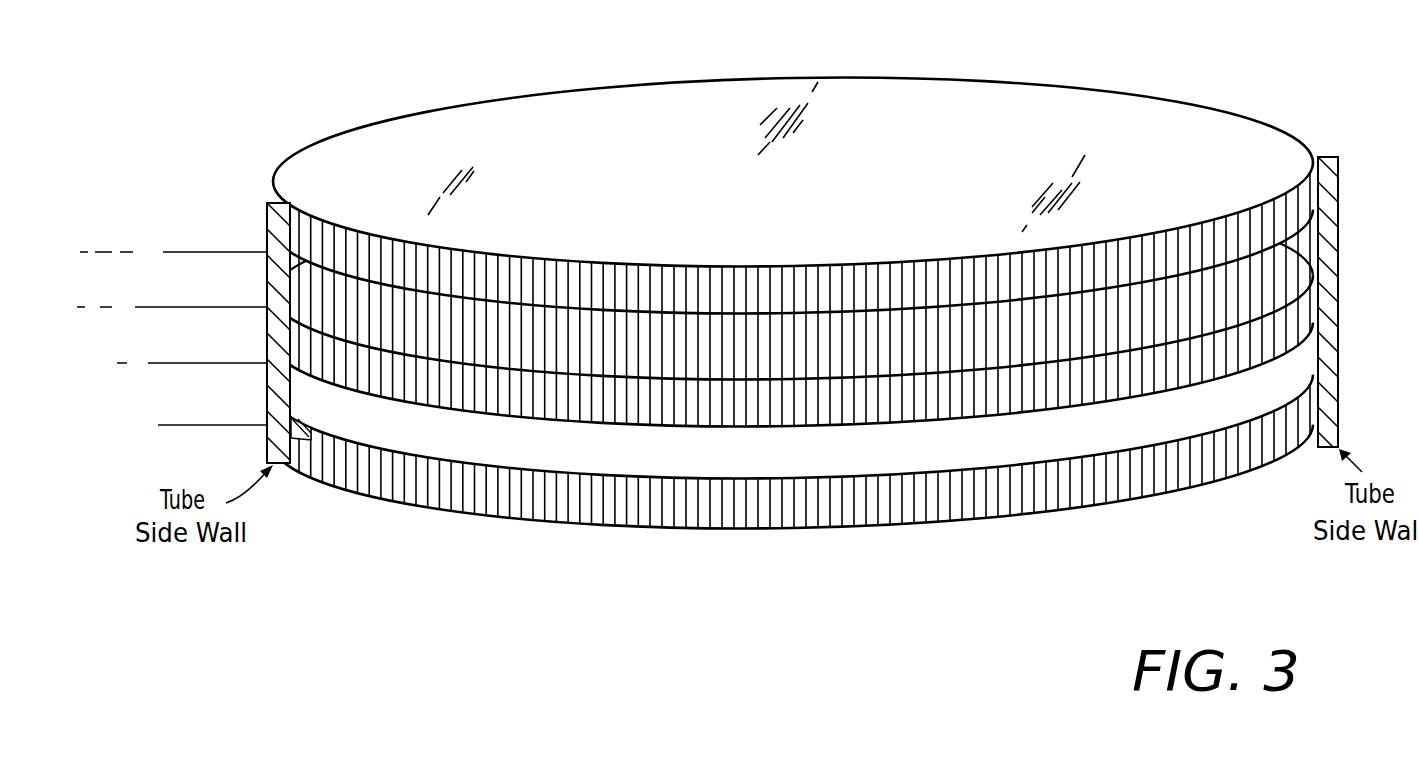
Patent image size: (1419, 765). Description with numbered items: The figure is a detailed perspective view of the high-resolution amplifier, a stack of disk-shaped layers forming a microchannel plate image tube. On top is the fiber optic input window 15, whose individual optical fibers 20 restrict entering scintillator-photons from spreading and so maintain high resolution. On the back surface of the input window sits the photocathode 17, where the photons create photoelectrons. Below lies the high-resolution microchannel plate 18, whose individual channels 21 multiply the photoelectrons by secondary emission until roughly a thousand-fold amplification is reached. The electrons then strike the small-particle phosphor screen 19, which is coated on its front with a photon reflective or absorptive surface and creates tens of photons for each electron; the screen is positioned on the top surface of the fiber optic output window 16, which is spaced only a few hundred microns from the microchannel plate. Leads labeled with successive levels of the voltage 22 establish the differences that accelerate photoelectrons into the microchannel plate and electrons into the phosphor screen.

The fiber optic input window 15 is at (1210, 130).
The fiber optic output window 16 is at (1230, 470).
The photocathode 17 is at (1337, 212).
The microchannel plate 18 is at (450, 402).
The phosphor screen 19 is at (610, 457).
The optical fibers 20 is at (1013, 495).
The channels 21 is at (1080, 398).
The voltage 22 is at (200, 252).